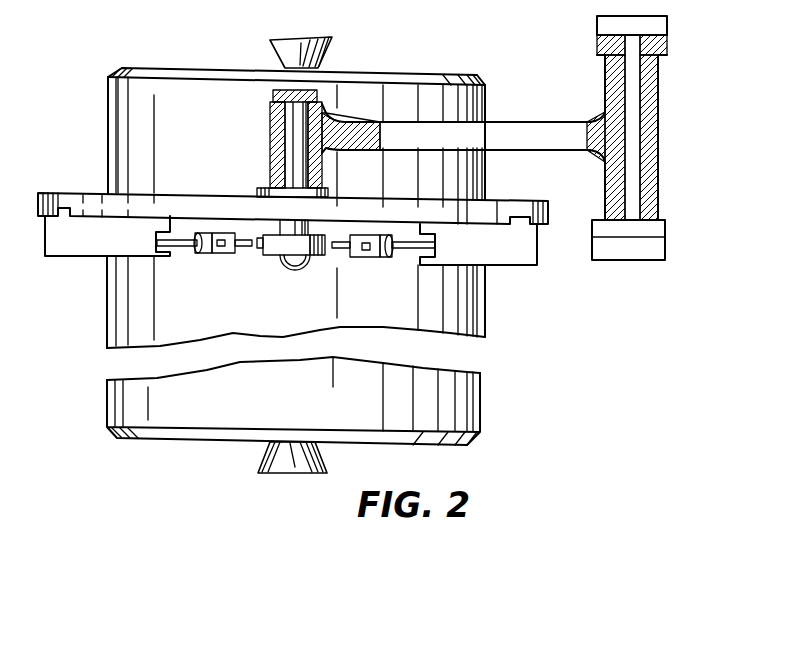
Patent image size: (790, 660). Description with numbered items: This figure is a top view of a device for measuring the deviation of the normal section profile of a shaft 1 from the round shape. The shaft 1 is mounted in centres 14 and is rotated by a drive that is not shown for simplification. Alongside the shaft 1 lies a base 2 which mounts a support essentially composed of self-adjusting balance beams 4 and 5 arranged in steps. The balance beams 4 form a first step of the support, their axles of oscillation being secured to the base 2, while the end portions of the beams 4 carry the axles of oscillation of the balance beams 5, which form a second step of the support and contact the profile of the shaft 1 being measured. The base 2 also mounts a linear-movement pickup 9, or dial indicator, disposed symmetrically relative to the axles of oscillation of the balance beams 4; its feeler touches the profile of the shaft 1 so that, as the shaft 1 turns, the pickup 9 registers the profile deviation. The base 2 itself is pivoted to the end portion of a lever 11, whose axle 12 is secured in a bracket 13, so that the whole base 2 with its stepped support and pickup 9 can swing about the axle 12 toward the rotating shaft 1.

The shaft 1 is at (648, 0).
The base 2 is at (495, 207).
The balance beams 4 is at (185, 247).
The balance beams 5 is at (243, 247).
The linear-movement pickup 9 is at (320, 265).
The lever 11 is at (531, 138).
The axle 12 is at (628, 125).
The bracket 13 is at (612, 245).
The centres 14 is at (328, 53).